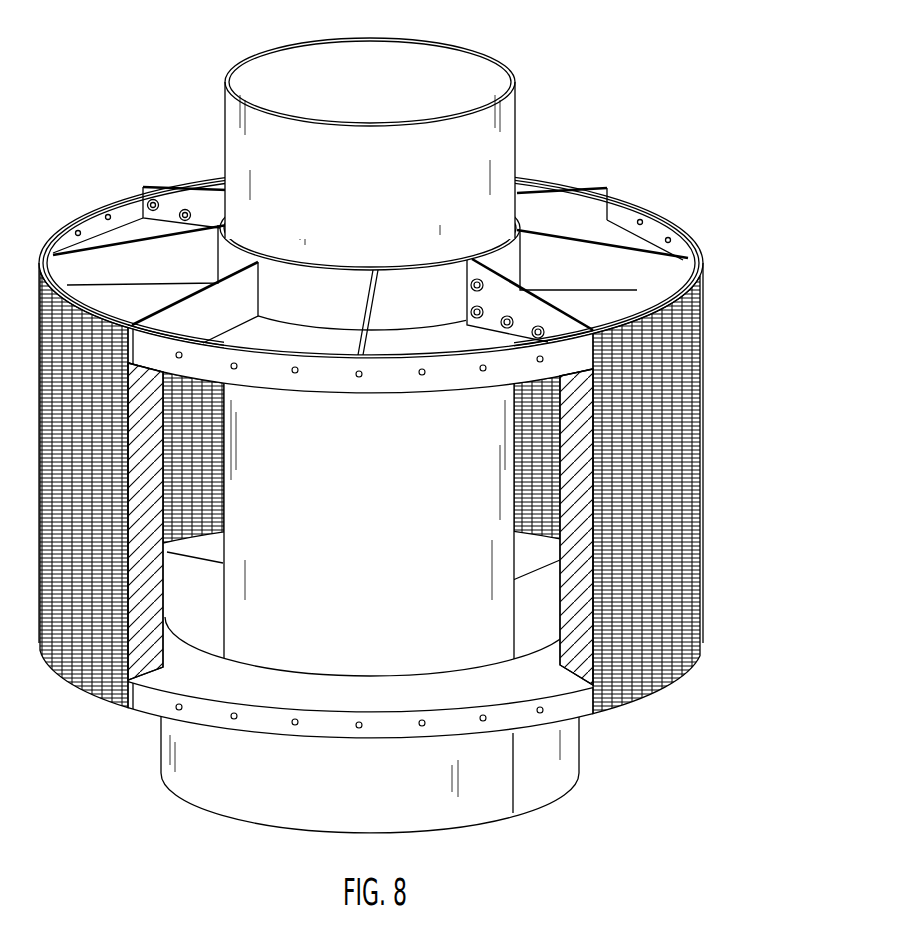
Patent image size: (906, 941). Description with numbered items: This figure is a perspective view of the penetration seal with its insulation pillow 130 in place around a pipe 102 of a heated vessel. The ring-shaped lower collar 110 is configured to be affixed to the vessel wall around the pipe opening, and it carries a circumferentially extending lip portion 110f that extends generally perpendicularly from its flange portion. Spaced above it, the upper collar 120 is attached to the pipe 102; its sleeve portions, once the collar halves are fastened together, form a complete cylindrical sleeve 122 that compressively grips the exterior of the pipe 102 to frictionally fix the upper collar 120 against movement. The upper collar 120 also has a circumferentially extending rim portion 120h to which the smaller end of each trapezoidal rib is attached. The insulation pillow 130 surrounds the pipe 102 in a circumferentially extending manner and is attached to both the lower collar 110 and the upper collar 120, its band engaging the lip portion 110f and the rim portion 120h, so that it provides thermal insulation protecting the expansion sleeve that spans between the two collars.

The pipe 102 is at (473, 50).
The lower collar 110 is at (322, 722).
The lip portion 110f is at (330, 723).
The upper collar 120 is at (410, 401).
The rim portion 120h is at (385, 377).
The cylindrical sleeve 122 is at (231, 255).
The insulation pillow 130 is at (676, 497).